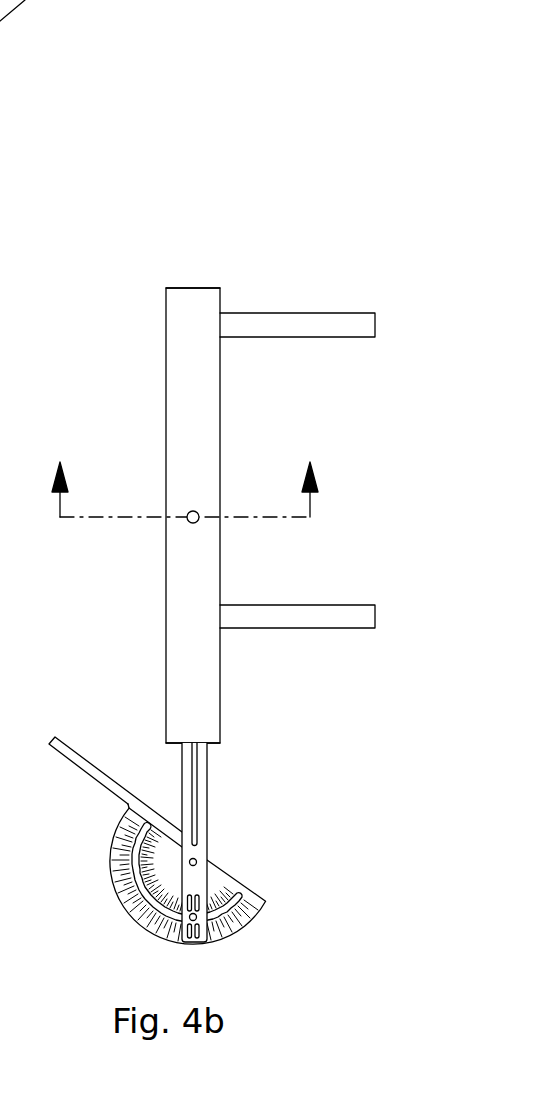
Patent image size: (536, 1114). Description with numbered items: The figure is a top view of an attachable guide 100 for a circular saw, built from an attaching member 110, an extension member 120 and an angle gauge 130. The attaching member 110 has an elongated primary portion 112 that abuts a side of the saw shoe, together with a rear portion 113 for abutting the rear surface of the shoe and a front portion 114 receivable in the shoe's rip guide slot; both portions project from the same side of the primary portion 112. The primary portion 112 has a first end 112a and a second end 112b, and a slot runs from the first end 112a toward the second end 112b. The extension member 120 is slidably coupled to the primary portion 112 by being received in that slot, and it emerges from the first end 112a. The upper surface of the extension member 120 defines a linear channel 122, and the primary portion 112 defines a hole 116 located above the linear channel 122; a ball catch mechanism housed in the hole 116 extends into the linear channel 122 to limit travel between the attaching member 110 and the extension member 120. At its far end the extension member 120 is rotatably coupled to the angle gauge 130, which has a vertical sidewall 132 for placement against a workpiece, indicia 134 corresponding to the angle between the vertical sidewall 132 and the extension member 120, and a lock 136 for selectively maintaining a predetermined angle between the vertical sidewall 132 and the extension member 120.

The attachable guide 100 is at (265, 142).
The attaching member 110 is at (143, 272).
The primary portion 112 is at (166, 385).
The first end 112a is at (173, 743).
The second end 112b is at (190, 288).
The rear portion 113 is at (315, 313).
The front portion 114 is at (330, 628).
The hole 116 is at (189, 522).
The extension member 120 is at (219, 792).
The linear channel 122 is at (194, 824).
The angle gauge 130 is at (94, 874).
The vertical sidewall 132 is at (62, 742).
The indicia 134 is at (252, 920).
The lock 136 is at (190, 919).